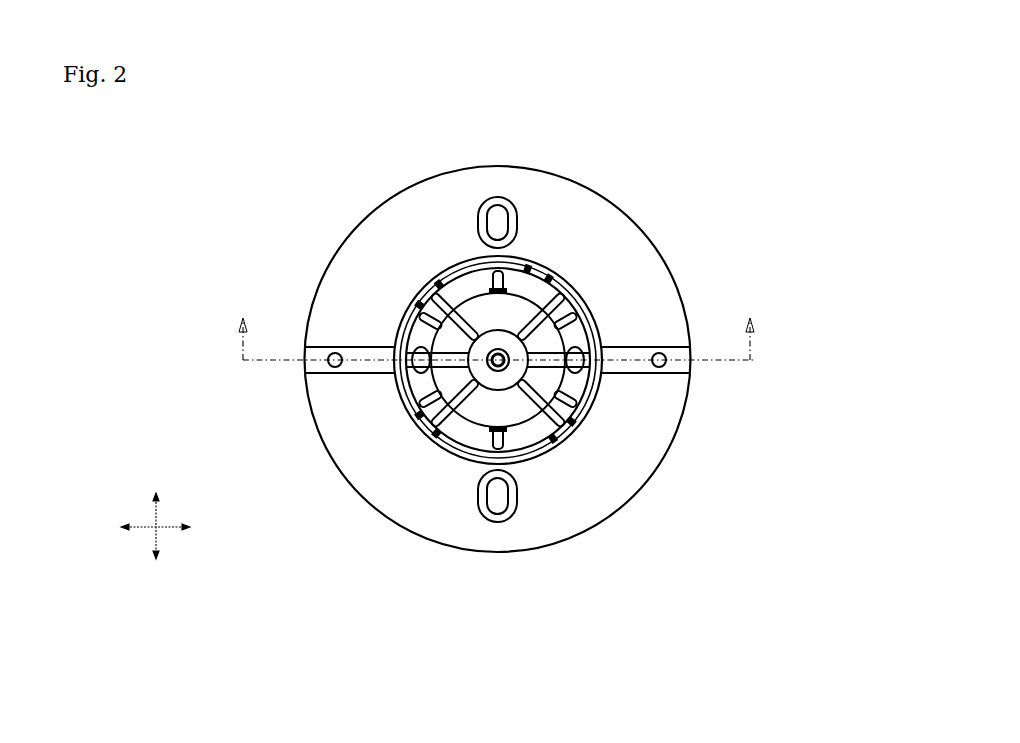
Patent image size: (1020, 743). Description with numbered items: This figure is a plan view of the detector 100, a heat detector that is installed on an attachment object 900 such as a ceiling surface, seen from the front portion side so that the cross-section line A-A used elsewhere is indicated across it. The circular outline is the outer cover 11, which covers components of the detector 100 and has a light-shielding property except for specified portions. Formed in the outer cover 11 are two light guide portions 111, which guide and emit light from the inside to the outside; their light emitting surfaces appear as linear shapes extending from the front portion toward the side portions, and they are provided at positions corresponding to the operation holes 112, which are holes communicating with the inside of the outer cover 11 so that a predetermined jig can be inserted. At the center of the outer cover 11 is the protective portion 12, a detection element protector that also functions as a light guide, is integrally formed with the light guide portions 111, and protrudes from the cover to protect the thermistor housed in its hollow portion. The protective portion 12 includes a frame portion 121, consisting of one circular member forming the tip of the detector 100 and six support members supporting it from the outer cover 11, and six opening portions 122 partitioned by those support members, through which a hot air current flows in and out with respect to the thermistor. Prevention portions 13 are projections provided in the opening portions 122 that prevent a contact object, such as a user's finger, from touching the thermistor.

The detector 100 is at (672, 201).
The outer cover 11 is at (560, 218).
The light guide portions 111 is at (320, 366).
The operation holes 112 is at (330, 373).
The protective portion 12 is at (418, 355).
The frame portion 121 is at (498, 328).
The opening portions 122 is at (457, 337).
The prevention portions 13 is at (560, 377).
The attachment object 900 is at (783, 275).